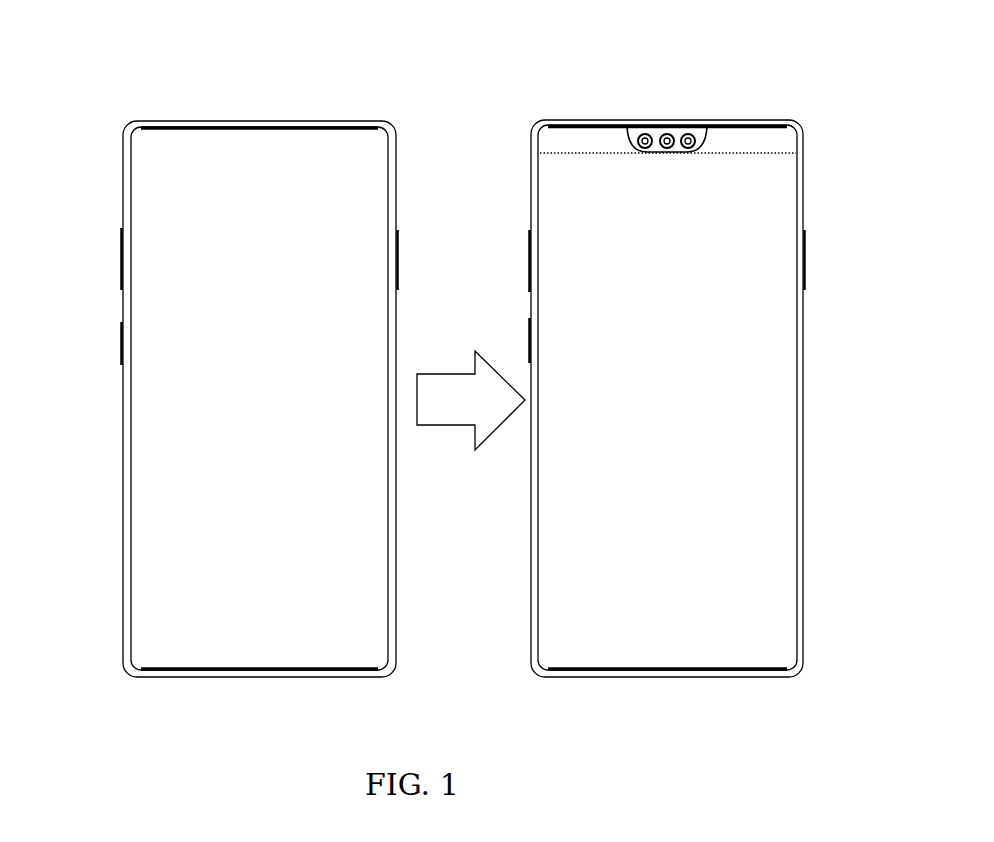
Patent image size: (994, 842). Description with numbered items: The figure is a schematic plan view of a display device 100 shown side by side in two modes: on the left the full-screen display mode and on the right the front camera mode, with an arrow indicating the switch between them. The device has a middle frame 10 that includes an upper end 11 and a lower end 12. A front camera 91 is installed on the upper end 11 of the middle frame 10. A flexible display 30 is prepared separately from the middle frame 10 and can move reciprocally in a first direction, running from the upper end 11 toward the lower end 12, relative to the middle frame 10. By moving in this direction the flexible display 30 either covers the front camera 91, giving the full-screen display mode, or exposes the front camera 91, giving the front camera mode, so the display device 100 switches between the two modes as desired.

The display device 100 is at (465, 63).
The middle frame 10 is at (127, 413).
The upper end 11 is at (217, 122).
The lower end 12 is at (190, 668).
The flexible display 30 is at (777, 411).
The front camera 91 is at (693, 127).